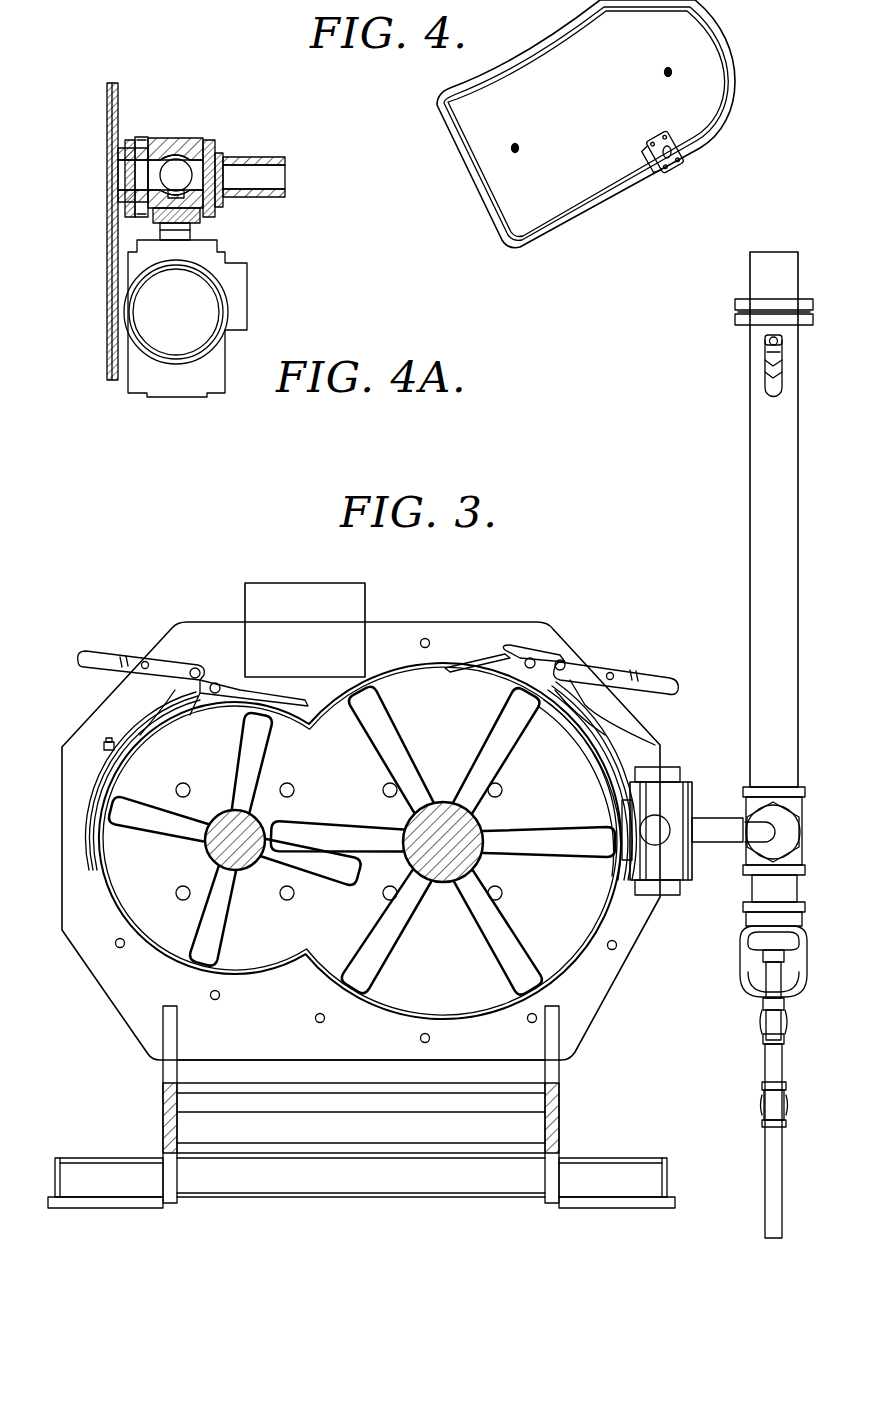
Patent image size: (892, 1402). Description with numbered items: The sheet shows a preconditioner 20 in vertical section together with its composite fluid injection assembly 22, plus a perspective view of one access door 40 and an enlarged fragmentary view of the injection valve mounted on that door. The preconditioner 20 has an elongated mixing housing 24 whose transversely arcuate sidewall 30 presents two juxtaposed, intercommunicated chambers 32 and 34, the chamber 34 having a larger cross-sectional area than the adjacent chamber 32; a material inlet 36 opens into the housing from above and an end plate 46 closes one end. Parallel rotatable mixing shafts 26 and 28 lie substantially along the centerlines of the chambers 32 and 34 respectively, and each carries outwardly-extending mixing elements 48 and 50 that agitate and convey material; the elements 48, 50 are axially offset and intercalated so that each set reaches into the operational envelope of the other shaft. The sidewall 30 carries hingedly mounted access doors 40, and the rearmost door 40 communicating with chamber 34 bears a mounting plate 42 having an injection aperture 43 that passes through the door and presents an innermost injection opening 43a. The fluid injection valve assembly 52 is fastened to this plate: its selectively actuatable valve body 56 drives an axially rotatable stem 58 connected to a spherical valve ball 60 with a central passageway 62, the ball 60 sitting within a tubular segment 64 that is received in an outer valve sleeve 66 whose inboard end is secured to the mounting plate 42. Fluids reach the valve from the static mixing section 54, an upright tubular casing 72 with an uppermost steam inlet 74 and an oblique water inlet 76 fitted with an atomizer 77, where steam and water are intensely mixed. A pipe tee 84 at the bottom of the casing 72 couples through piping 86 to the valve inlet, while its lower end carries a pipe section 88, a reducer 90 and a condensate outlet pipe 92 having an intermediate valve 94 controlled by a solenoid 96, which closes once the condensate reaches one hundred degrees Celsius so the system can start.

In FIG. 3, the preconditioner 20 is at (645, 440).
In FIG. 3, the composite fluid injection assembly 22 is at (773, 519).
In FIG. 3, the mixing housing 24 is at (532, 603).
In FIG. 3, the mixing shaft 26 is at (212, 850).
In FIG. 3, the mixing shaft 28 is at (441, 802).
In FIG. 3, the sidewall 30 is at (480, 1018).
In FIG. 3, the chamber 32 is at (132, 896).
In FIG. 3, the chamber 34 is at (588, 905).
In FIG. 3, the material inlet 36 is at (300, 592).
In FIG. 4, the access door 40 is at (695, 43).
In FIG. 4A, the access door 40 is at (107, 90).
In FIG. 3, the access door 40 is at (588, 736).
In FIG. 4, the mounting plate 42 is at (672, 174).
In FIG. 4A, the mounting plate 42 is at (140, 138).
In FIG. 4, the injection aperture 43 is at (672, 147).
In FIG. 4A, the injection opening 43a is at (118, 176).
In FIG. 3, the injection opening 43a is at (620, 822).
In FIG. 3, the end plate 46 is at (180, 638).
In FIG. 3, the mixing elements 48 is at (268, 750).
In FIG. 3, the mixing elements 50 is at (398, 932).
In FIG. 4A, the fluid injection valve assembly 52 is at (290, 268).
In FIG. 3, the fluid injection valve assembly 52 is at (668, 792).
In FIG. 3, the static mixing section 54 is at (788, 914).
In FIG. 4A, the valve body 56 is at (182, 385).
In FIG. 3, the valve body 56 is at (692, 798).
In FIG. 4A, the stem 58 is at (185, 196).
In FIG. 4A, the valve ball 60 is at (195, 140).
In FIG. 4A, the central passageway 62 is at (168, 160).
In FIG. 4A, the tubular segment 64 is at (210, 148).
In FIG. 4A, the outer valve sleeve 66 is at (200, 218).
In FIG. 3, the tubular casing 72 is at (765, 535).
In FIG. 3, the steam inlet 74 is at (758, 278).
In FIG. 3, the water inlet 76 is at (770, 382).
In FIG. 3, the atomizer 77 is at (782, 349).
In FIG. 3, the pipe tee 84 is at (800, 805).
In FIG. 4A, the piping 86 is at (275, 175).
In FIG. 3, the piping 86 is at (716, 846).
In FIG. 3, the pipe section 88 is at (798, 890).
In FIG. 3, the reducer 90 is at (797, 916).
In FIG. 3, the condensate outlet pipe 92 is at (778, 1175).
In FIG. 3, the valve 94 is at (765, 1024).
In FIG. 3, the solenoid 96 is at (805, 950).